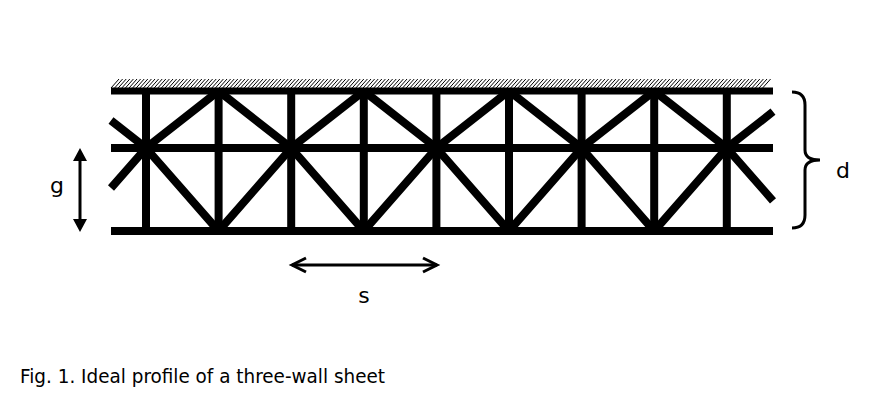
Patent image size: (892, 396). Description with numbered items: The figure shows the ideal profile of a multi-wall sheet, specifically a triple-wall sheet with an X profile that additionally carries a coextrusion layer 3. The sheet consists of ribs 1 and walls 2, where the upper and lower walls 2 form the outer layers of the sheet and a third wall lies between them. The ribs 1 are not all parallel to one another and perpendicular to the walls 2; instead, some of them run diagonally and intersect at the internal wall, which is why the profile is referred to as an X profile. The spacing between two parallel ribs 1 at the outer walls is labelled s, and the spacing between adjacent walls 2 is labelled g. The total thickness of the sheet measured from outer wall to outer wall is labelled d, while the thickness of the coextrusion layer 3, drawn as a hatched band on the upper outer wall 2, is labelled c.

The ribs 1 is at (513, 195).
The walls 2 is at (288, 92).
The coextrusion layer 3 is at (457, 83).